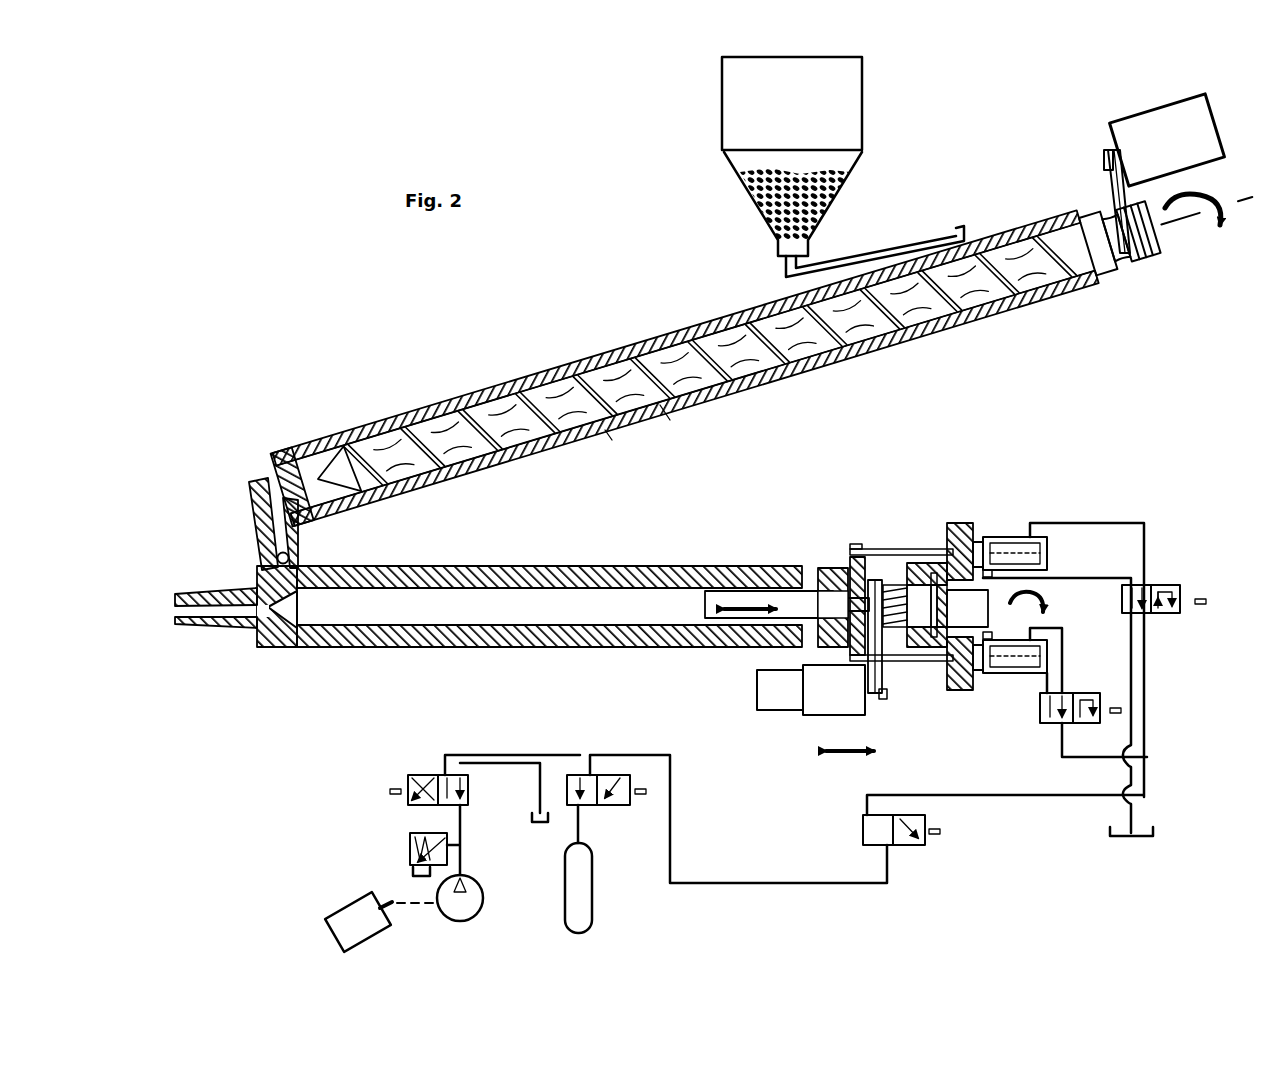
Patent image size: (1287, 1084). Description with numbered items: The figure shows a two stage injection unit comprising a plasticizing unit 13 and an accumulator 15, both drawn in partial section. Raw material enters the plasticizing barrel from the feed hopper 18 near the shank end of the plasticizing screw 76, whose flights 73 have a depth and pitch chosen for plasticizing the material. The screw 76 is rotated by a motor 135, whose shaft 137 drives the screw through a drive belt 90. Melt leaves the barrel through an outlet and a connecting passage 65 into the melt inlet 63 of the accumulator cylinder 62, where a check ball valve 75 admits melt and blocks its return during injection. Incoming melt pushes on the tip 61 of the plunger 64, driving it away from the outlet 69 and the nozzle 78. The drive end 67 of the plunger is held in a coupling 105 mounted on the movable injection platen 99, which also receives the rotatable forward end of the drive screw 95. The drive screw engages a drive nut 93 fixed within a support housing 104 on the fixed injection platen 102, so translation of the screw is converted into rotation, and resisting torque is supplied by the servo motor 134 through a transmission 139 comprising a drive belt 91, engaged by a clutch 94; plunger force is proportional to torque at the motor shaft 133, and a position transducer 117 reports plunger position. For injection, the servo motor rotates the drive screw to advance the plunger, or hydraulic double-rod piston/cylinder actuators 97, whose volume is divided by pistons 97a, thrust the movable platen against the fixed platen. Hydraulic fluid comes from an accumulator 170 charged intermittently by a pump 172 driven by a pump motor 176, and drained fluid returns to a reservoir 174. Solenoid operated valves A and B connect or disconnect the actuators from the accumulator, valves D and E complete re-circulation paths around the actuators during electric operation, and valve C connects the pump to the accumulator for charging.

The plasticizing unit 13 is at (767, 344).
The accumulator 15 is at (1032, 418).
The feed hopper 18 is at (806, 108).
The tip 61 is at (292, 620).
The accumulator cylinder 62 is at (505, 575).
The melt inlet 63 is at (298, 566).
The plunger 64 is at (585, 600).
The connecting passage 65 is at (258, 485).
The drive end 67 is at (803, 600).
The outlet 69 is at (285, 650).
The flights 73 is at (605, 440).
The check ball valve 75 is at (289, 554).
The plasticizing screw 76 is at (635, 425).
The nozzle 78 is at (208, 630).
The drive belt 90 is at (1112, 150).
The drive belt 91 is at (868, 700).
The drive nut 93 is at (930, 640).
The clutch 94 is at (878, 598).
The drive screw 95 is at (905, 637).
The piston/cylinder actuators 97 is at (1012, 538).
The pistons 97a is at (986, 540).
The movable injection platen 99 is at (853, 547).
The fixed injection platen 102 is at (958, 525).
The support housing 104 is at (925, 585).
The coupling 105 is at (855, 570).
The position transducer 117 is at (797, 700).
The motor shaft 133 is at (884, 698).
The servo motor 134 is at (852, 698).
The motor 135 is at (1133, 128).
The shaft 137 is at (1105, 152).
The transmission 139 is at (946, 730).
The accumulator 170 is at (585, 895).
The pump 172 is at (470, 880).
The reservoir 174 is at (540, 810).
The pump motor 176 is at (338, 913).
The solenoid operated valve A is at (903, 825).
The solenoid operated valve B is at (609, 785).
The solenoid operated valve C is at (429, 785).
The solenoid operated valve D is at (1080, 703).
The solenoid operated valve E is at (1164, 594).